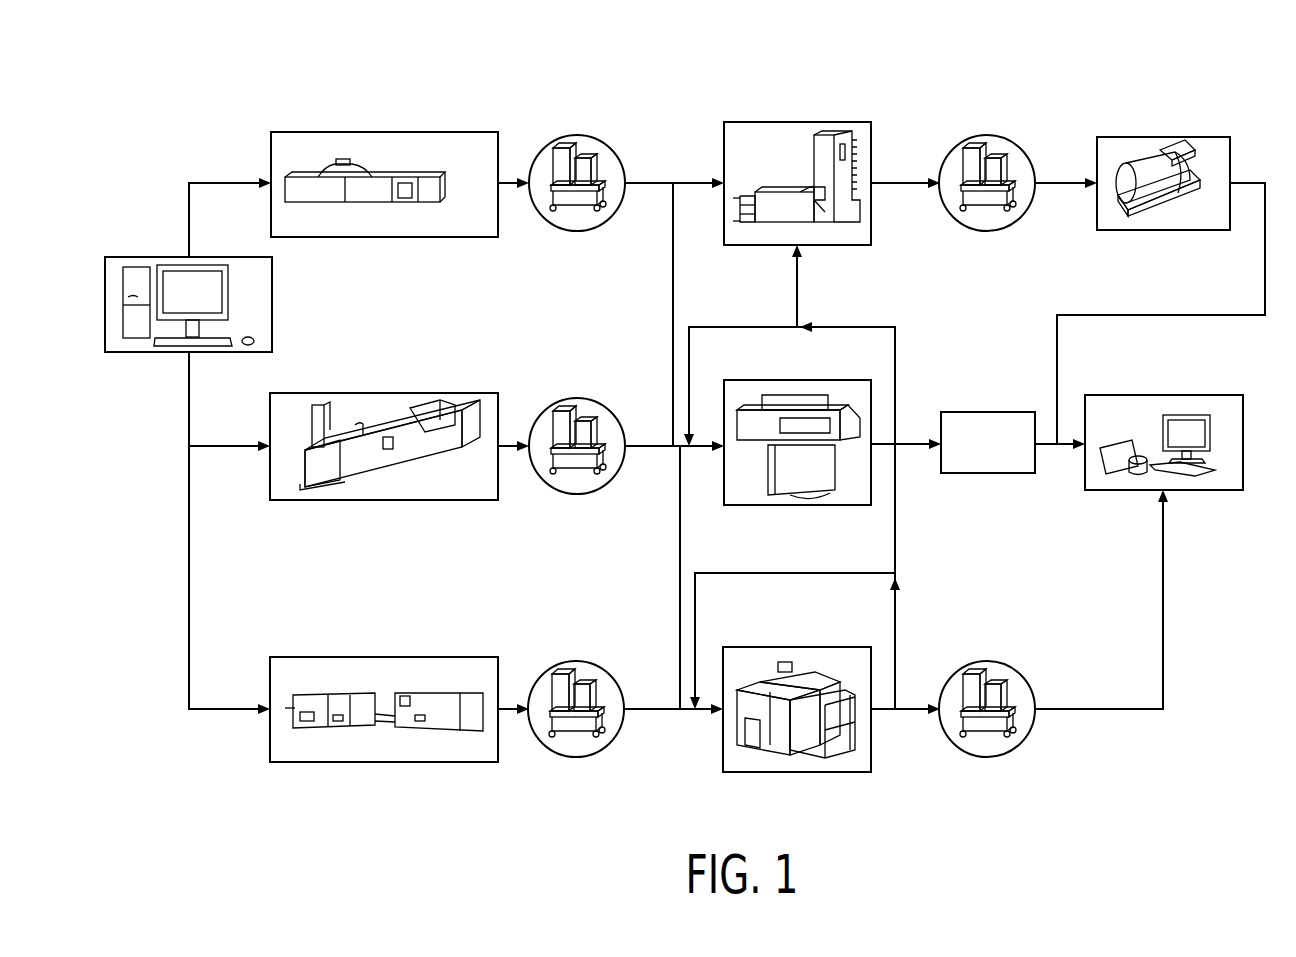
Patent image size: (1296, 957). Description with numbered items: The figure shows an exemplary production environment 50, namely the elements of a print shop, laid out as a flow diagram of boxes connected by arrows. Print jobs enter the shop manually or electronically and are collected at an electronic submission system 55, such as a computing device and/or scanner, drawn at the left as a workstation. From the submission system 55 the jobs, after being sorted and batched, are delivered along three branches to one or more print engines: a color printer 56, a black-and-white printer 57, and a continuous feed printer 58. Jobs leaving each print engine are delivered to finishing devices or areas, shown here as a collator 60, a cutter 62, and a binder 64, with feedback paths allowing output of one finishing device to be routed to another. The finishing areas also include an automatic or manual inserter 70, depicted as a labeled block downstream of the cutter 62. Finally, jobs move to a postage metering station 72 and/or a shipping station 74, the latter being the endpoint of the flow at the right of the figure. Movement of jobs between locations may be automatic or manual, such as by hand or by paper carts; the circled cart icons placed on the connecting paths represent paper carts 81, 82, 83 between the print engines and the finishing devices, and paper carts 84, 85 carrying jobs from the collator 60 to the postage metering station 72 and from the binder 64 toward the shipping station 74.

The production environment 50 is at (213, 113).
The electronic submission system 55 is at (140, 353).
The color printer 56 is at (404, 238).
The black-and-white printer 57 is at (403, 500).
The continuous feed printer 58 is at (403, 762).
The collator 60 is at (803, 245).
The cutter 62 is at (806, 505).
The binder 64 is at (808, 772).
The inserter 70 is at (984, 473).
The postage metering station 72 is at (1157, 230).
The shipping station 74 is at (1193, 490).
The paper cart 81 is at (576, 230).
The paper cart 82 is at (574, 494).
The paper cart 83 is at (575, 756).
The paper cart 84 is at (987, 230).
The paper cart 85 is at (987, 757).